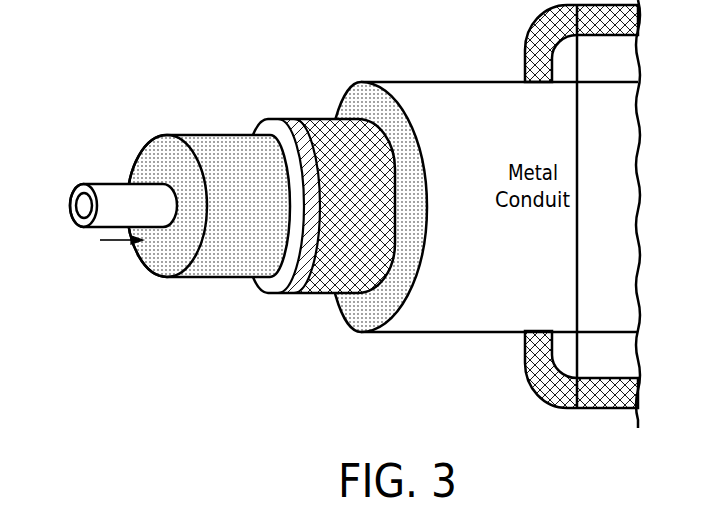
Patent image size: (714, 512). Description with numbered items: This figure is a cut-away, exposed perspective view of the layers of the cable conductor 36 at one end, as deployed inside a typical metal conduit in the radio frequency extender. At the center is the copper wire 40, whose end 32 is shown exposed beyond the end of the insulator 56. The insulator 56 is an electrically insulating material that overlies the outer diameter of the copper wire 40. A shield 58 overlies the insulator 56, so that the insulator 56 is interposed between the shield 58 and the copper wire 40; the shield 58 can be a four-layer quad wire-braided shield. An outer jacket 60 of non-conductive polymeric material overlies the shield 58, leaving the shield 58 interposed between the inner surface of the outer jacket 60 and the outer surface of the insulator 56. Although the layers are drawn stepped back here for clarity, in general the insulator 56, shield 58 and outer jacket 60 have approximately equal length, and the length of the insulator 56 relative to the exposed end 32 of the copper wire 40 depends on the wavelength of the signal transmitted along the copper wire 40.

The end of copper wire 32 is at (82, 177).
The cable conductor 36 is at (297, 59).
The copper wire 40 is at (88, 233).
The insulator 56 is at (200, 131).
The shield 58 is at (308, 117).
The outer jacket 60 is at (435, 83).